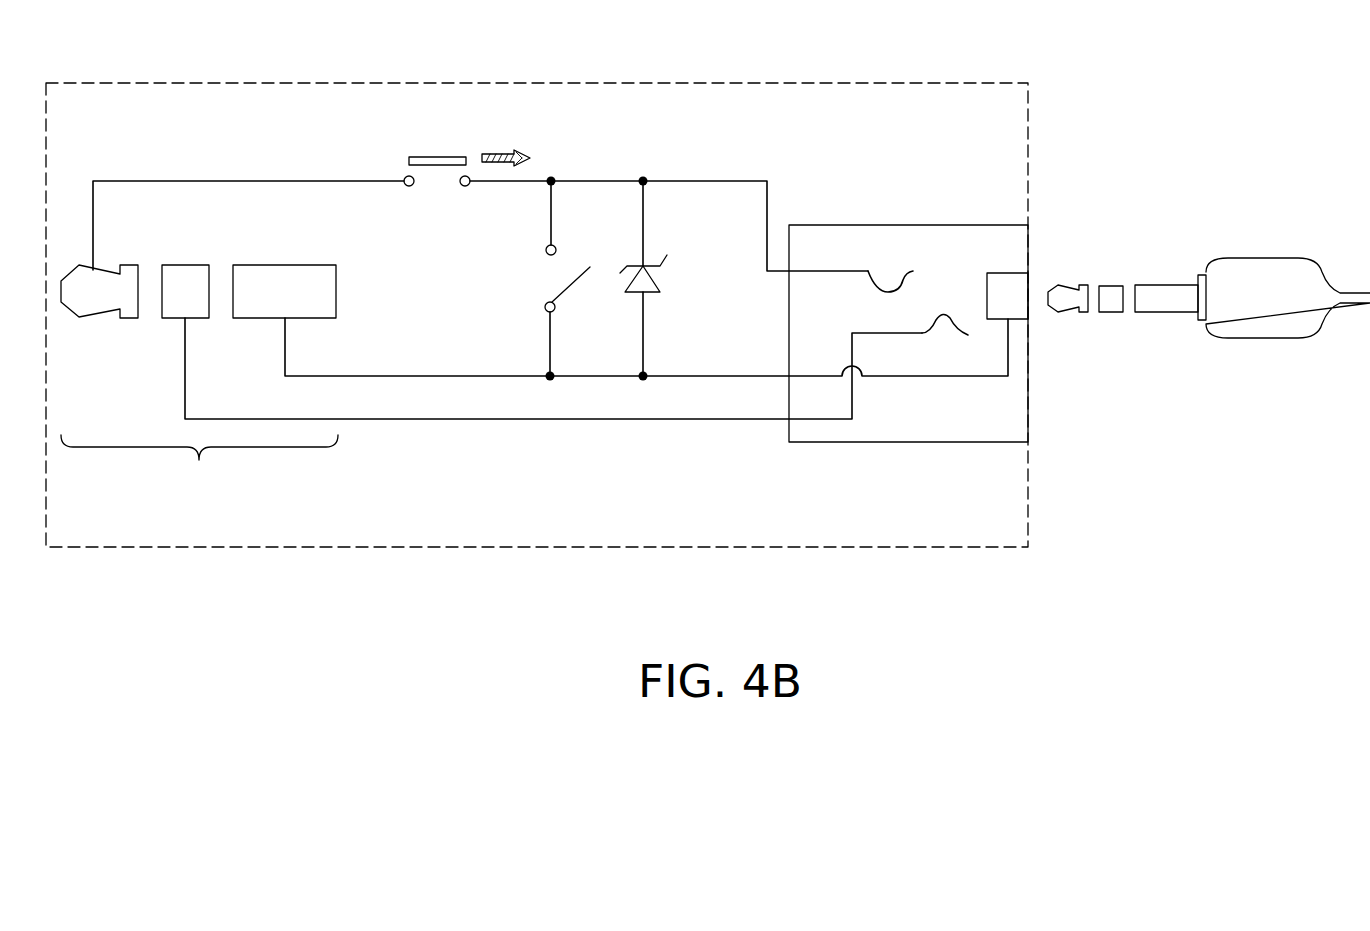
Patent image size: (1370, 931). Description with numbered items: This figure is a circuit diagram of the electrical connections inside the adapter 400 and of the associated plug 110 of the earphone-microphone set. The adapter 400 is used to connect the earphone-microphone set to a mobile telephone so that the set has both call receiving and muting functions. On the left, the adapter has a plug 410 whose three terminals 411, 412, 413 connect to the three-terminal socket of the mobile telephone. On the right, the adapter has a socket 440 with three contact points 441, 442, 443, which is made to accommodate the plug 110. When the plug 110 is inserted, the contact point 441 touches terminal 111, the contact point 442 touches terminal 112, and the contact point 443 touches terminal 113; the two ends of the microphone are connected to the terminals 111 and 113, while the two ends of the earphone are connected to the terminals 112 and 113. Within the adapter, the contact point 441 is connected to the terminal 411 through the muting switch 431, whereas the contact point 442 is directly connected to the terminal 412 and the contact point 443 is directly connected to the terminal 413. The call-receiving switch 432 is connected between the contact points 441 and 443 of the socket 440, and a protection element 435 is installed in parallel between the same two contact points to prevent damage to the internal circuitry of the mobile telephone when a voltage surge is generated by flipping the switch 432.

The adapter 400 is at (748, 83).
The plug 410 is at (199, 350).
The terminal 411 is at (96, 320).
The terminal 412 is at (187, 262).
The terminal 413 is at (287, 262).
The muting switch 431 is at (447, 155).
The call-receiving switch 432 is at (545, 307).
The protection element 435 is at (658, 282).
The socket 440 is at (927, 225).
The contact point 441 is at (868, 270).
The contact point 442 is at (898, 333).
The contact point 443 is at (1010, 273).
The plug 110 is at (1208, 230).
The terminal 111 is at (1063, 312).
The terminal 112 is at (1114, 312).
The terminal 113 is at (1180, 312).